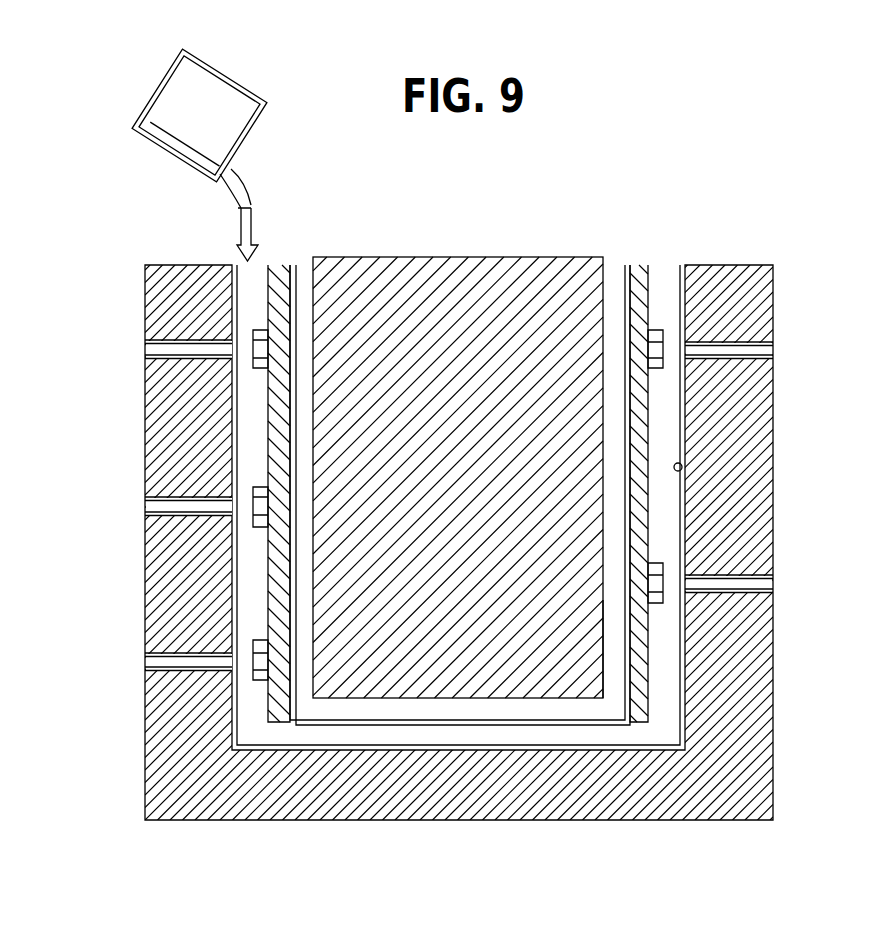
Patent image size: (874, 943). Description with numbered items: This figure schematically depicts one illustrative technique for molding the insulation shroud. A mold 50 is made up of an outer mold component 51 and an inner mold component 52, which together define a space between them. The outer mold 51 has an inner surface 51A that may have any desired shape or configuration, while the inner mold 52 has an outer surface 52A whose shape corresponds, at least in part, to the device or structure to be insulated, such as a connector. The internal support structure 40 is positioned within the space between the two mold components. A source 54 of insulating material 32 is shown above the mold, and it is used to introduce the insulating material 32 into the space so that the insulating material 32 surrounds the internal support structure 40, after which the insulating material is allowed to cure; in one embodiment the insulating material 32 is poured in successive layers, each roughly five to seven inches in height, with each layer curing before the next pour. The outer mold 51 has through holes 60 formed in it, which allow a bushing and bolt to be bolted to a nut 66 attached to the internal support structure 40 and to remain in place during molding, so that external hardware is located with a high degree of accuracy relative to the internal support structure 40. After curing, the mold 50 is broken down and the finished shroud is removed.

The mold 50 is at (618, 160).
The outer mold component 51 is at (745, 273).
The inner surface of outer mold 51A is at (682, 467).
The inner mold component 52 is at (443, 260).
The outer surface of inner mold 52A is at (602, 645).
The source of insulating material 54 is at (185, 150).
The insulating material 32 is at (248, 195).
The internal support structure 40 is at (638, 270).
The through holes 60 is at (168, 352).
The nut 66 is at (262, 332).